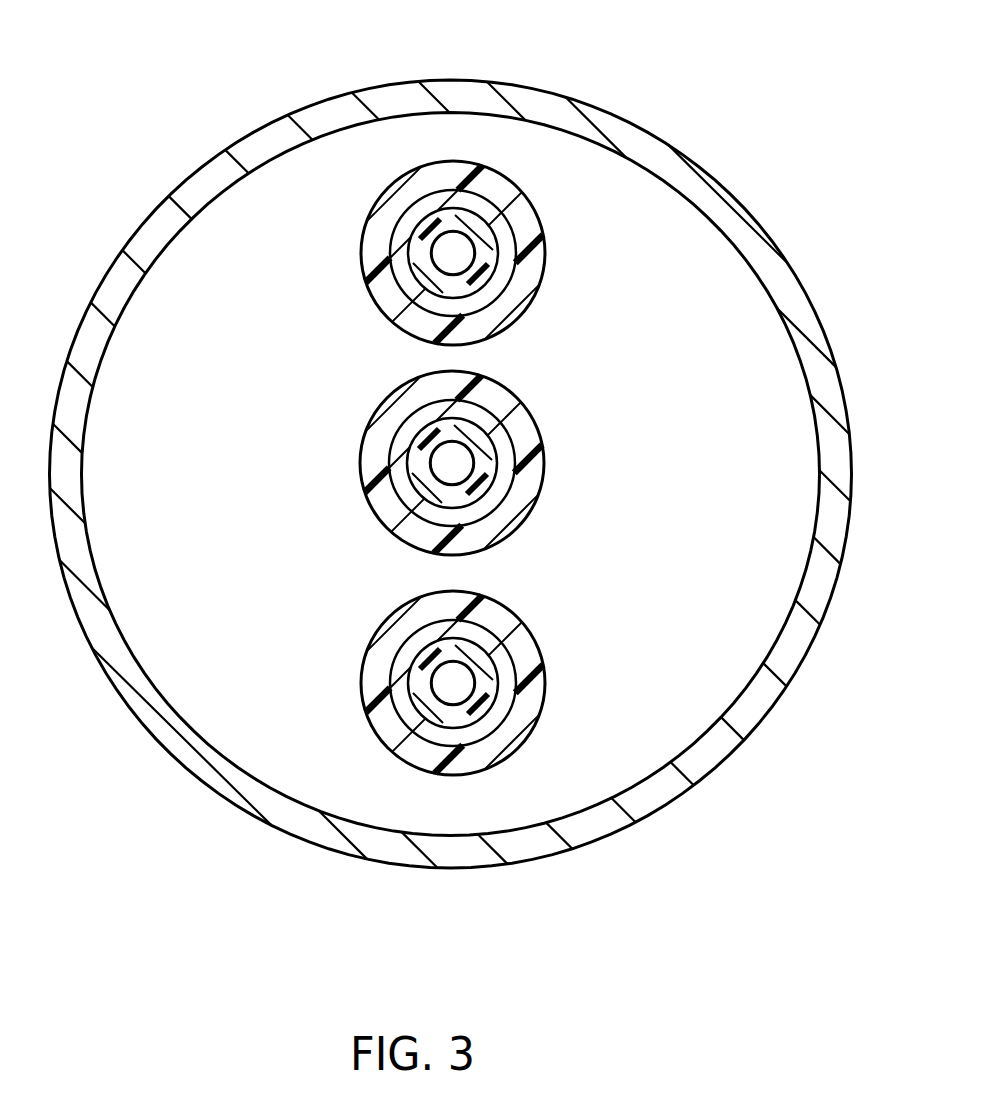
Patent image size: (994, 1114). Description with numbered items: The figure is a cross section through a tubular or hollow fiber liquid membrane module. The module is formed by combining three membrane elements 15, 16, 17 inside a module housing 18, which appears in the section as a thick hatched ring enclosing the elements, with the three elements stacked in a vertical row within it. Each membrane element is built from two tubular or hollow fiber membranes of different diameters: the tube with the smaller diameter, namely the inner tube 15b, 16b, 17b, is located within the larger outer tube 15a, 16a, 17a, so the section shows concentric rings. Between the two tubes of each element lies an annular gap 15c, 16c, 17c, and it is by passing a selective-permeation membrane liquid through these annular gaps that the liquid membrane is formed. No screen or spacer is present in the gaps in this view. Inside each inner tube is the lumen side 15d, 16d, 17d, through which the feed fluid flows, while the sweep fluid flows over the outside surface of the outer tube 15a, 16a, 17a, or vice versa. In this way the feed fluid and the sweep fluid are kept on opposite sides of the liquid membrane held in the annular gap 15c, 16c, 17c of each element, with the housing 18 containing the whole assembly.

The membrane element 15 is at (347, 288).
The outer tubular or hollow fiber membrane 15a is at (380, 207).
The inner tubular or hollow fiber membrane 15b is at (485, 236).
The annular gap 15c is at (435, 205).
The lumen side 15d is at (450, 255).
The membrane element 16 is at (353, 480).
The outer tubular or hollow fiber membrane 16a is at (367, 428).
The inner tubular or hollow fiber membrane 16b is at (422, 483).
The annular gap 16c is at (505, 443).
The lumen side 16d is at (452, 458).
The membrane element 17 is at (357, 703).
The outer tubular or hollow fiber membrane 17a is at (390, 737).
The inner tubular or hollow fiber membrane 17b is at (457, 722).
The annular gap 17c is at (510, 700).
The lumen side 17d is at (460, 677).
The module housing 18 is at (802, 624).